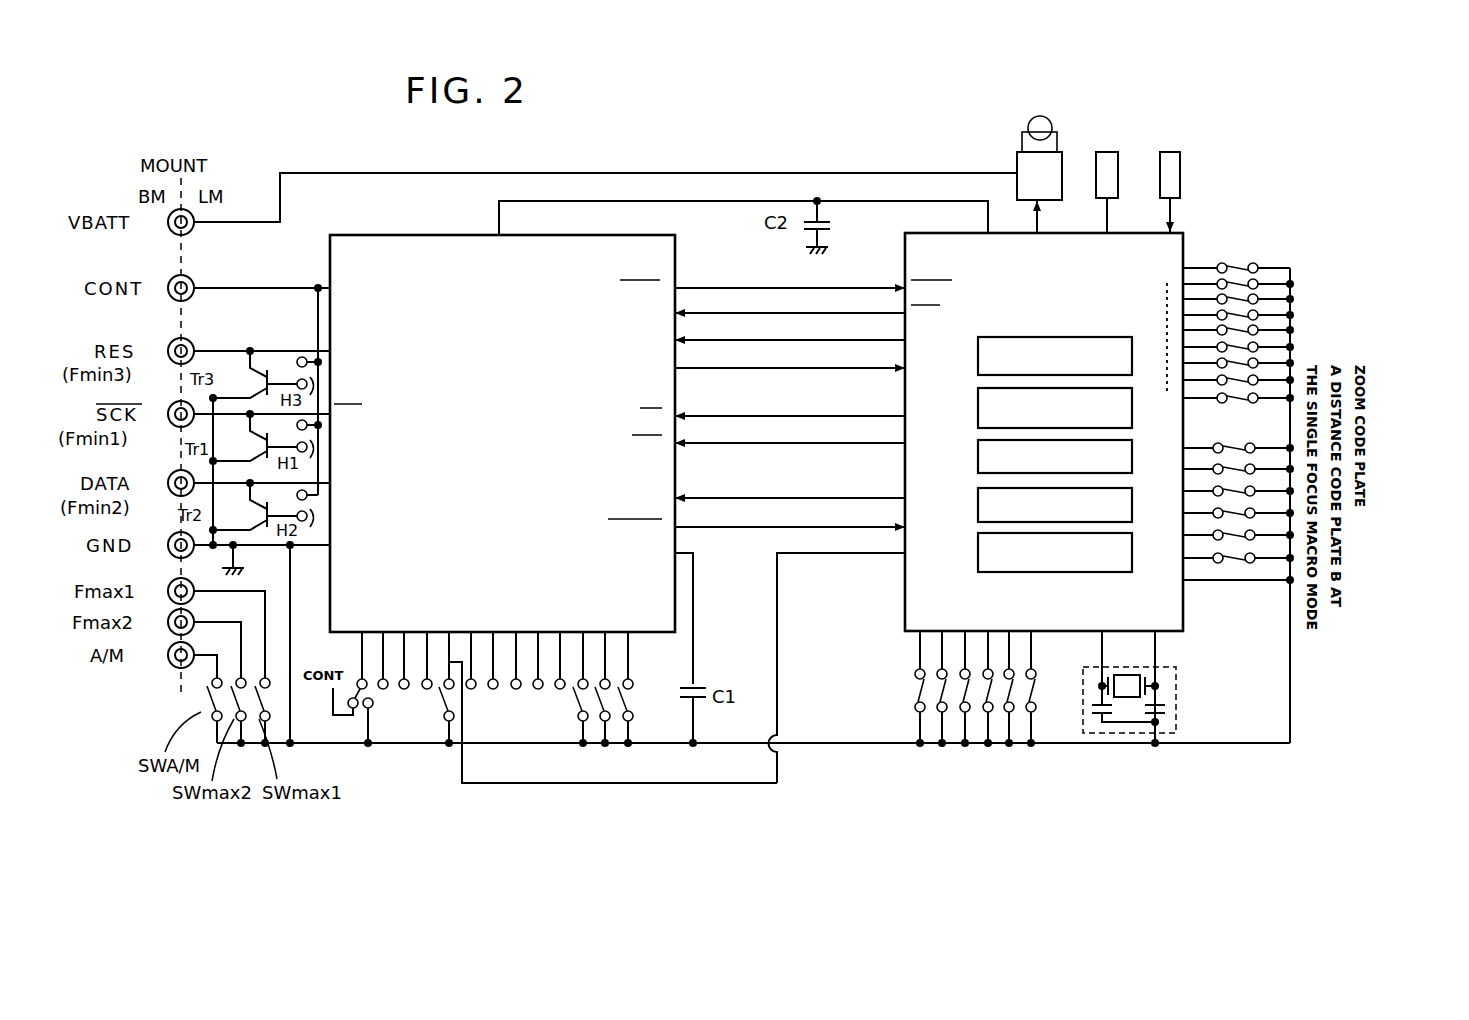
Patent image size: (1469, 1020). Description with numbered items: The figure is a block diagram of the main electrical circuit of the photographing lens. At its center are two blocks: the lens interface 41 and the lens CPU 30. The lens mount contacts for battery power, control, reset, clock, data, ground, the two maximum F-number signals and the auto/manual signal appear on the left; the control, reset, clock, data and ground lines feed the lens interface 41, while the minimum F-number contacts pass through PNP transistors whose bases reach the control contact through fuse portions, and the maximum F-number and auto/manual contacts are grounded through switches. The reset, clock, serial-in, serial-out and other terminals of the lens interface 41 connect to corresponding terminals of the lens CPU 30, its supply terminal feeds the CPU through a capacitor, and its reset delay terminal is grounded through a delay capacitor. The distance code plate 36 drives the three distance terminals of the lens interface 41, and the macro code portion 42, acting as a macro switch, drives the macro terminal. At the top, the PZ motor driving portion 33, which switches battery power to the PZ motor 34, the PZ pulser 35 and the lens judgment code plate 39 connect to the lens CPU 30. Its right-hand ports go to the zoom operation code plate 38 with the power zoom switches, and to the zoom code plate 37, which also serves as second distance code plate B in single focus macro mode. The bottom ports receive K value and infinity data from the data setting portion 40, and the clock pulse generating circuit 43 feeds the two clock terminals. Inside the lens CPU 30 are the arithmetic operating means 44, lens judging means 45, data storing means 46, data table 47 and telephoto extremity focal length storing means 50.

The lens CPU 30 is at (1018, 421).
The PZ motor driving portion 33 is at (1057, 157).
The PZ motor 34 is at (1035, 124).
The PZ pulser 35 is at (1107, 160).
The distance code plate 36 is at (640, 748).
The zoom code plate 37 is at (1383, 440).
The zoom operation code plate 38 is at (1383, 255).
The lens judgment code plate 39 is at (1170, 160).
The data setting portion 40 is at (1034, 800).
The lens interface 41 is at (450, 242).
The macro code portion 42 is at (447, 747).
The clock pulse generating circuit 43 is at (1177, 690).
The arithmetic operating means 44 is at (978, 465).
The lens judging means 45 is at (980, 362).
The data storing means 46 is at (976, 517).
The data table 47 is at (980, 572).
The telephoto extremity focal length storing means 50 is at (978, 413).